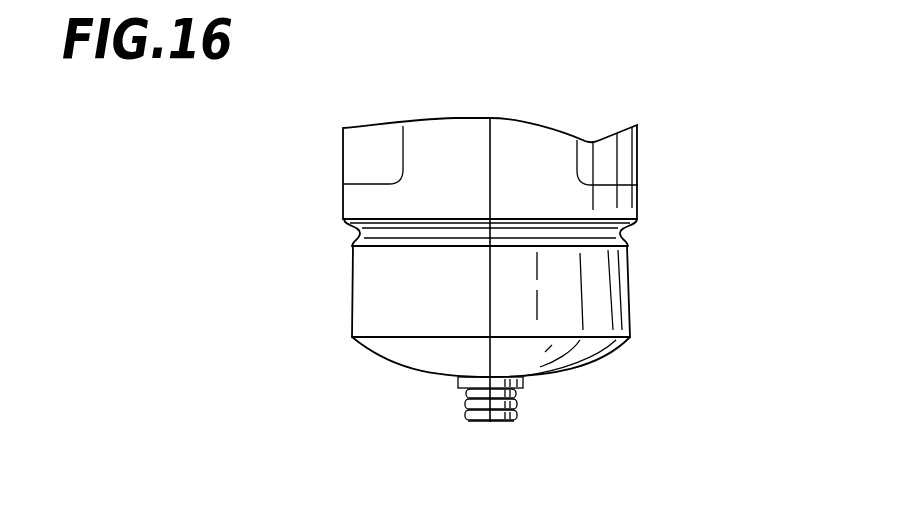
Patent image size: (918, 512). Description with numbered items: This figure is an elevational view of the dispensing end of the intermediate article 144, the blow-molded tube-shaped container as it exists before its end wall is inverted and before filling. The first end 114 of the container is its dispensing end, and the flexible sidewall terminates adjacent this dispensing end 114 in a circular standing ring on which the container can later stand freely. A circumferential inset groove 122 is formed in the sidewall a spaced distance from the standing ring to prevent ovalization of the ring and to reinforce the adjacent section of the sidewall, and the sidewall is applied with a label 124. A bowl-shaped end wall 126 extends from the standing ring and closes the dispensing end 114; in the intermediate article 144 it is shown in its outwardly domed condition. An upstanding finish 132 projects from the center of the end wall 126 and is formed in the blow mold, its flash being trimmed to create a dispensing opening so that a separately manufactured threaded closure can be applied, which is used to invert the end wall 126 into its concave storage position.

The first end 114 is at (403, 365).
The circumferential inset groove 122 is at (622, 237).
The label 124 is at (607, 160).
The bowl-shaped end wall 126 is at (573, 367).
The upstanding finish 132 is at (517, 400).
The intermediate article 144 is at (615, 295).